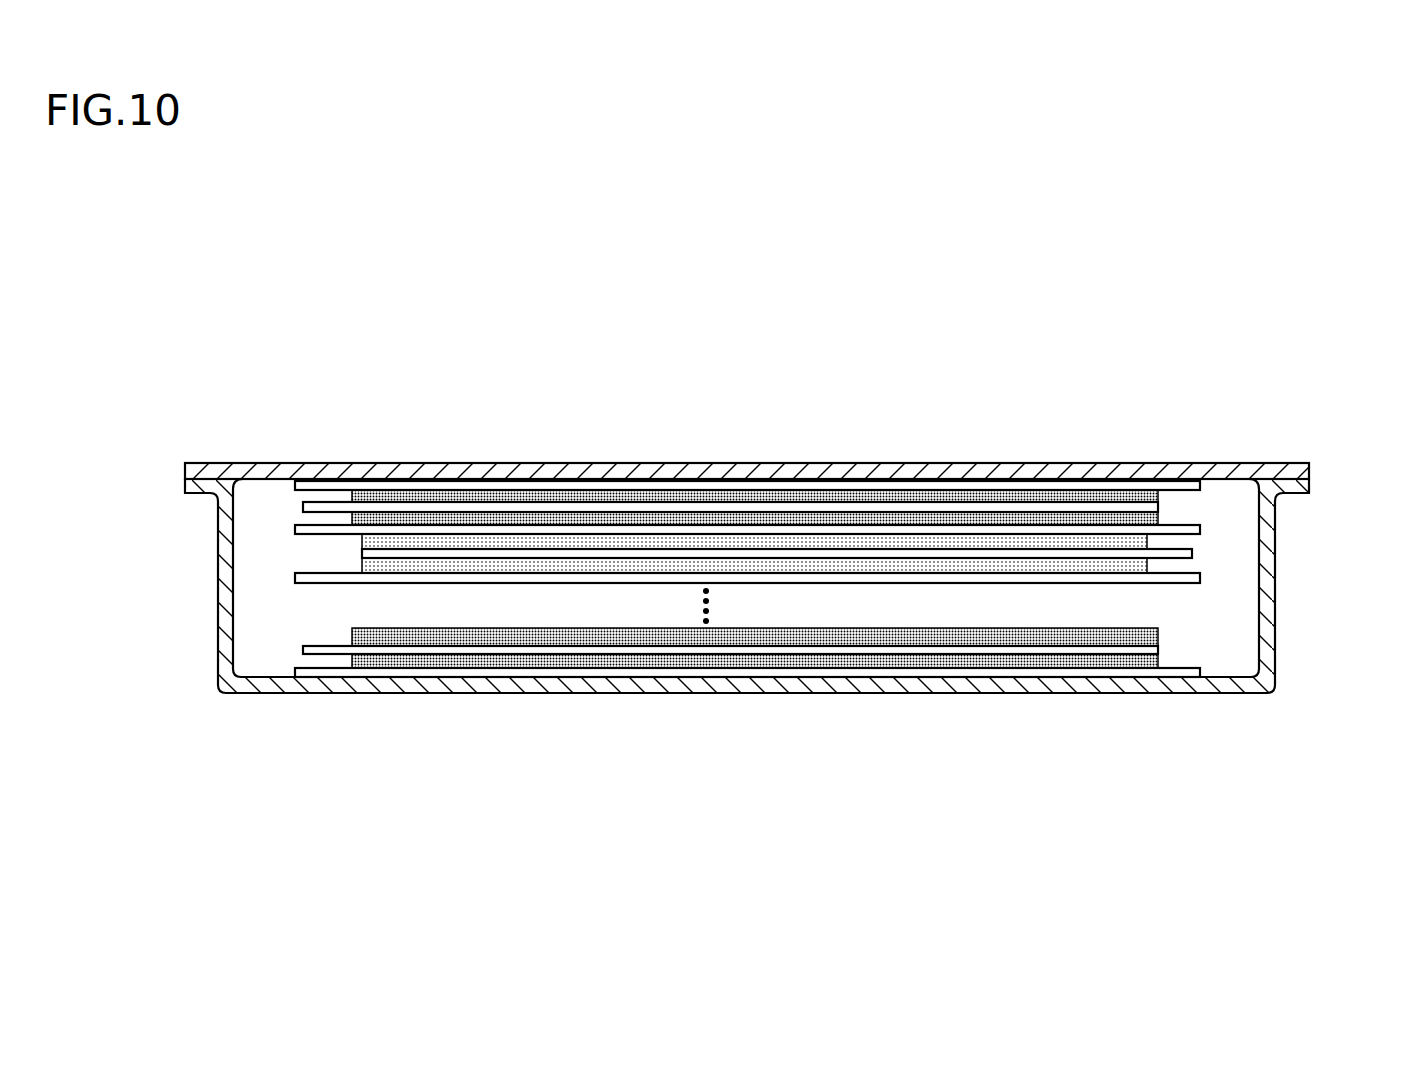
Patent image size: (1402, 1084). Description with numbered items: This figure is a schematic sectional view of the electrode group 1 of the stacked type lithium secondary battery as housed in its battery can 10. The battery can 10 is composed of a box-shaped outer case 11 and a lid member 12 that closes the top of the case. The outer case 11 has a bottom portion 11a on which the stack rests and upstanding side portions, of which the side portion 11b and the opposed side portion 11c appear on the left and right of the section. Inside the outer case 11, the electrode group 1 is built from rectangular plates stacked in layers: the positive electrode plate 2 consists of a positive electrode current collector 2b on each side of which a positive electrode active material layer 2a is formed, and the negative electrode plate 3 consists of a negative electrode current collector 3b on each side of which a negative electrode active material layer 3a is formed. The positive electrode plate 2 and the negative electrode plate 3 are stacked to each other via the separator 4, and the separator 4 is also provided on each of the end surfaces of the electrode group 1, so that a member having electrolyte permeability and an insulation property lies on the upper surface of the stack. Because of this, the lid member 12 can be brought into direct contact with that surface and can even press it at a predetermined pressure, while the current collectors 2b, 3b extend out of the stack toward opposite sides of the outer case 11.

The electrode group 1 is at (284, 485).
The positive electrode plate 2 is at (830, 395).
The positive electrode active material layer 2a is at (843, 543).
The positive electrode current collector 2b is at (890, 554).
The negative electrode plate 3 is at (400, 395).
The negative electrode active material layer 3a is at (409, 494).
The negative electrode current collector 3b is at (458, 506).
The separator 4 is at (336, 483).
The battery can 10 is at (108, 447).
The outer case 11 is at (192, 488).
The bottom portion 11a is at (697, 685).
The side portion 11b is at (228, 630).
The side portion 11c is at (1265, 594).
The lid member 12 is at (188, 471).